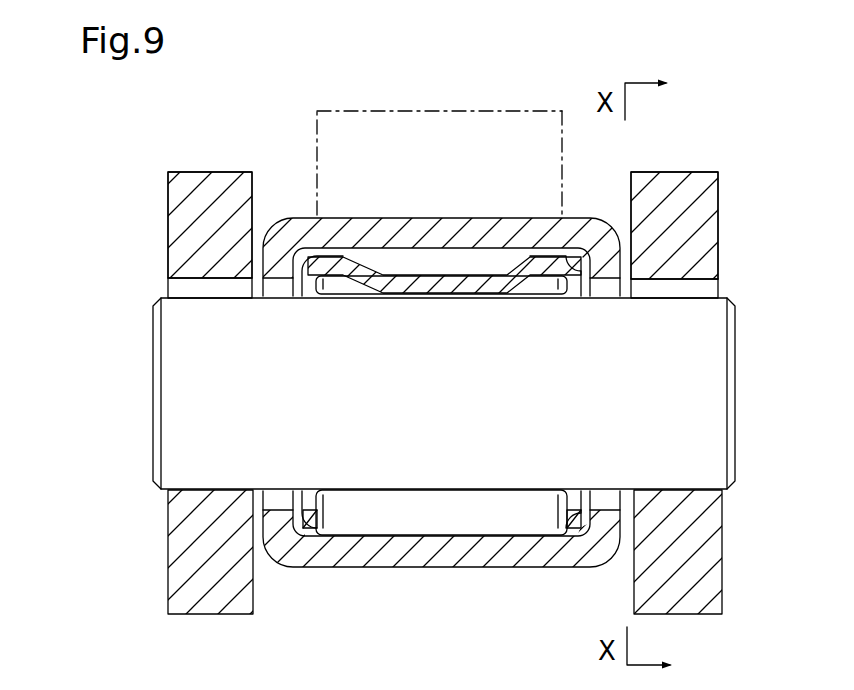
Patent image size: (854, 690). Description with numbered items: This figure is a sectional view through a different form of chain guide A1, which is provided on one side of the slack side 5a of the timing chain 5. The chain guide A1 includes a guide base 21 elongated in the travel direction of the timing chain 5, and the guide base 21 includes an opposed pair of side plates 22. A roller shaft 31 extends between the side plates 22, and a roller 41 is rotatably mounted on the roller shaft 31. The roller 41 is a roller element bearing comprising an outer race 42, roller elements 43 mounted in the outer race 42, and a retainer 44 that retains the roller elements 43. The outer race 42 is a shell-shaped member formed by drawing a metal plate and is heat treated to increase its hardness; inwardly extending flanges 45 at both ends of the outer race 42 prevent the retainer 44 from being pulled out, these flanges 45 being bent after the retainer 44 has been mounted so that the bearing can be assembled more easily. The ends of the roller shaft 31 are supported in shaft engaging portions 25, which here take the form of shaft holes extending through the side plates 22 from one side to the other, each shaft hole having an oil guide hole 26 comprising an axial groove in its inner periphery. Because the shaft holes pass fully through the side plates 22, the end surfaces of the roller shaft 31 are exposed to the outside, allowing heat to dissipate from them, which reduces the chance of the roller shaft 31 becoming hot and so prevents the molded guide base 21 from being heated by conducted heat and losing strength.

The timing chain 5 is at (438, 127).
The slack side 5a is at (418, 115).
The chain guide A1 is at (443, 203).
The guide base 21 is at (166, 208).
The side plates 22 is at (182, 248).
The oil guide hole 26 is at (200, 282).
The roller shaft 31 is at (182, 387).
The shaft engaging portion 25 is at (190, 489).
The roller 41 is at (434, 337).
The outer race 42 is at (443, 232).
The roller elements 43 is at (345, 289).
The retainer 44 is at (455, 292).
The inwardly extending flanges 45 is at (283, 512).